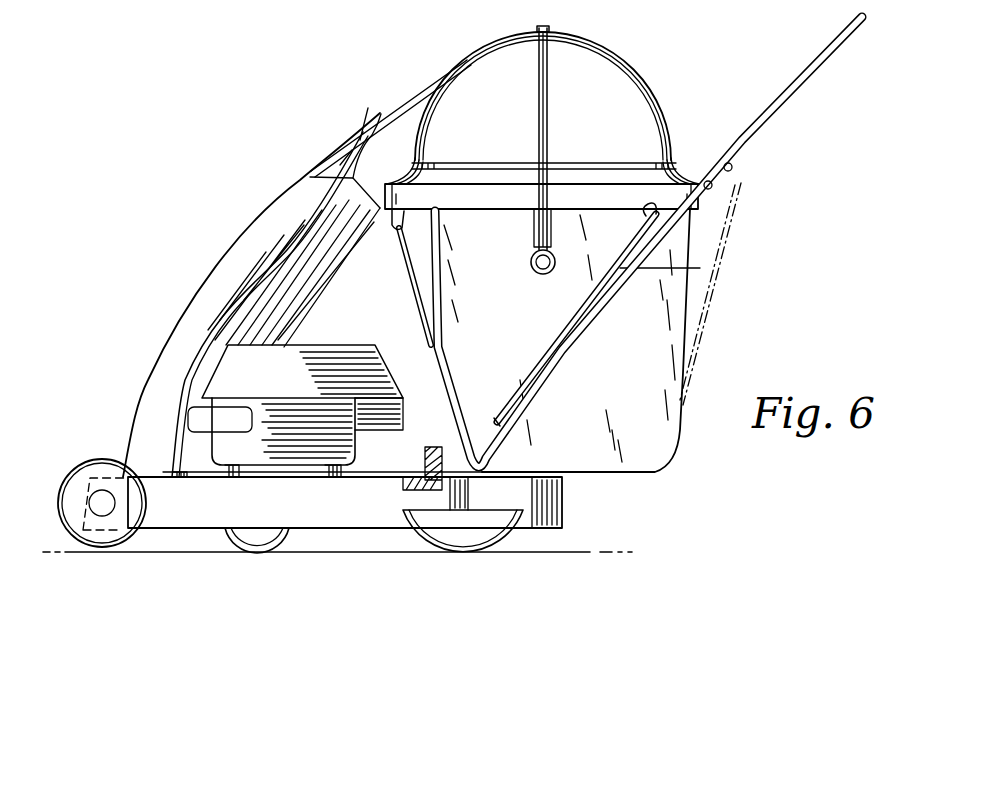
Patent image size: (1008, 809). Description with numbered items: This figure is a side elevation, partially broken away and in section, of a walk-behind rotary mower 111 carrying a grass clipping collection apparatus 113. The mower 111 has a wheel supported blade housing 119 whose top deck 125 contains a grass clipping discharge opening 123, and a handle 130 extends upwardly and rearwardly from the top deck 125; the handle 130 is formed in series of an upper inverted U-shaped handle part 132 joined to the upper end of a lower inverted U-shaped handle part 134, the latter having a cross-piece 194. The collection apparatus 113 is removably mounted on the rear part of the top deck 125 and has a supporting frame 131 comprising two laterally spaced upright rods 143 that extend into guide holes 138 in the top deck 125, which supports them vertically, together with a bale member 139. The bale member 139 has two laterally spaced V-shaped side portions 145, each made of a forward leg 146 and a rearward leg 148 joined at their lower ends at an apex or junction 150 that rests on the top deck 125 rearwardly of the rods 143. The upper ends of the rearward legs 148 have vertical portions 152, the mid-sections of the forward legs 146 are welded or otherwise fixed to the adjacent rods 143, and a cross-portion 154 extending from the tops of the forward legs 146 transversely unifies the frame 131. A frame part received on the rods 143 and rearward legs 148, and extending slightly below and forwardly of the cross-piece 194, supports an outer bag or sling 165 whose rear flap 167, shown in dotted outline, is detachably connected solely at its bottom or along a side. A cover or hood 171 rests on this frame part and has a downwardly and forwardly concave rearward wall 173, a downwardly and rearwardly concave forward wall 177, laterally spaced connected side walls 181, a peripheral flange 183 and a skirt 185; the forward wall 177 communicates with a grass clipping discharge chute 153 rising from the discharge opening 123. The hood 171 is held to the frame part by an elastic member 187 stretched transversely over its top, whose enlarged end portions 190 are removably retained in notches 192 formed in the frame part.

The walk-behind rotary mower 111 is at (125, 273).
The grass clipping collection apparatus 113 is at (525, 345).
The blade housing 119 is at (372, 515).
The grass clipping discharge opening 123 is at (200, 465).
The top deck 125 is at (263, 462).
The handle 130 is at (808, 62).
The supporting frame 131 is at (462, 392).
The upper handle part 132 is at (780, 114).
The lower handle part 134 is at (566, 342).
The guide holes 138 is at (480, 458).
The bale member 139 is at (582, 300).
The upright rods 143 is at (430, 350).
The V-shaped side portions 145 is at (504, 421).
The forward legs 146 is at (420, 262).
The rearward legs 148 is at (700, 268).
The apex or junction 150 is at (480, 476).
The vertical portions 152 is at (650, 212).
The grass clipping discharge chute 153 is at (298, 214).
The cross-portion 154 is at (405, 234).
The outer bag or sling 165 is at (668, 478).
The flap 167 is at (733, 260).
The cover or hood 171 is at (627, 62).
The rearward wall 173 is at (650, 96).
The forward wall 177 is at (458, 62).
The side walls 181 is at (588, 76).
The peripheral flange 183 is at (416, 160).
The skirt 185 is at (588, 190).
The elastic member 187 is at (536, 46).
The enlarged portions 190 is at (530, 263).
The notches 192 is at (533, 228).
The cross-piece 194 is at (732, 168).